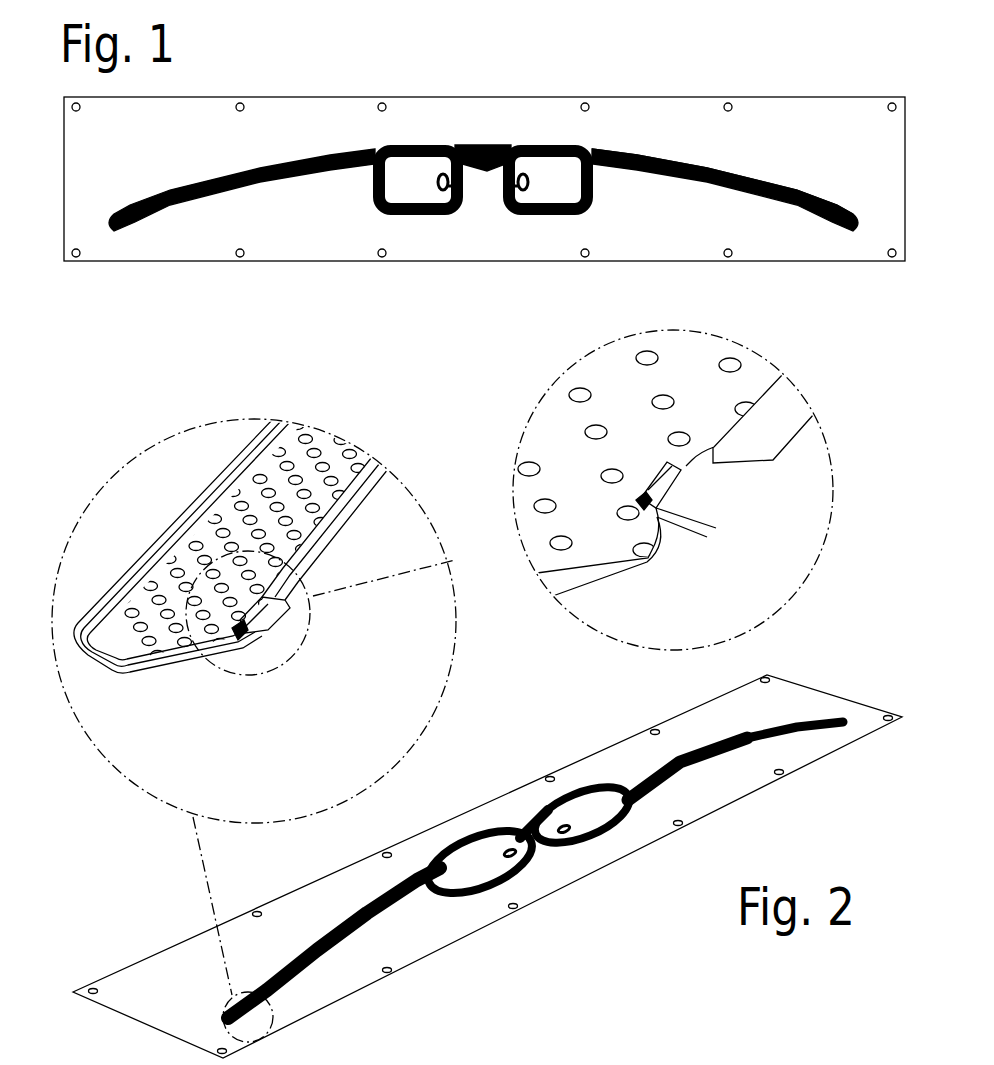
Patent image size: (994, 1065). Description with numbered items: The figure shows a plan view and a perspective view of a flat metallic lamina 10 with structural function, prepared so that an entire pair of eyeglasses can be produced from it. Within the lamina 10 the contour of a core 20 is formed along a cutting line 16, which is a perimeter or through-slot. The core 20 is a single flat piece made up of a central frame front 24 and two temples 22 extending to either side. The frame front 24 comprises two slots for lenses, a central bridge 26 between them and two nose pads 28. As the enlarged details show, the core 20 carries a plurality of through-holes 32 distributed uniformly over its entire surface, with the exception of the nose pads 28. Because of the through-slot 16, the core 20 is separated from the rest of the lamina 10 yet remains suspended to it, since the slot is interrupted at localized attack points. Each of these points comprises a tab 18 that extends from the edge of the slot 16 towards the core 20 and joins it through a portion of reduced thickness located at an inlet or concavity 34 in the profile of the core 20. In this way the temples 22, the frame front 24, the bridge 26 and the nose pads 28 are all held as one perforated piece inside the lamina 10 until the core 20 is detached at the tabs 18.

In FIG. 1, the metallic lamina 10 is at (283, 114).
In FIG. 2, the metallic lamina 10 is at (598, 757).
In FIG. 1, the cutting line 16 is at (742, 178).
In FIG. 2, the cutting line 16 is at (213, 480).
In FIG. 2, the tab 18 is at (270, 613).
In FIG. 1, the core 20 is at (483, 186).
In FIG. 2, the core 20 is at (523, 826).
In FIG. 1, the temples 22 is at (202, 202).
In FIG. 2, the temples 22 is at (690, 768).
In FIG. 1, the frame front 24 is at (415, 216).
In FIG. 1, the central bridge 26 is at (487, 146).
In FIG. 1, the nose pads 28 is at (523, 176).
In FIG. 2, the through-holes 32 is at (205, 538).
In FIG. 2, the concavity 34 is at (237, 638).